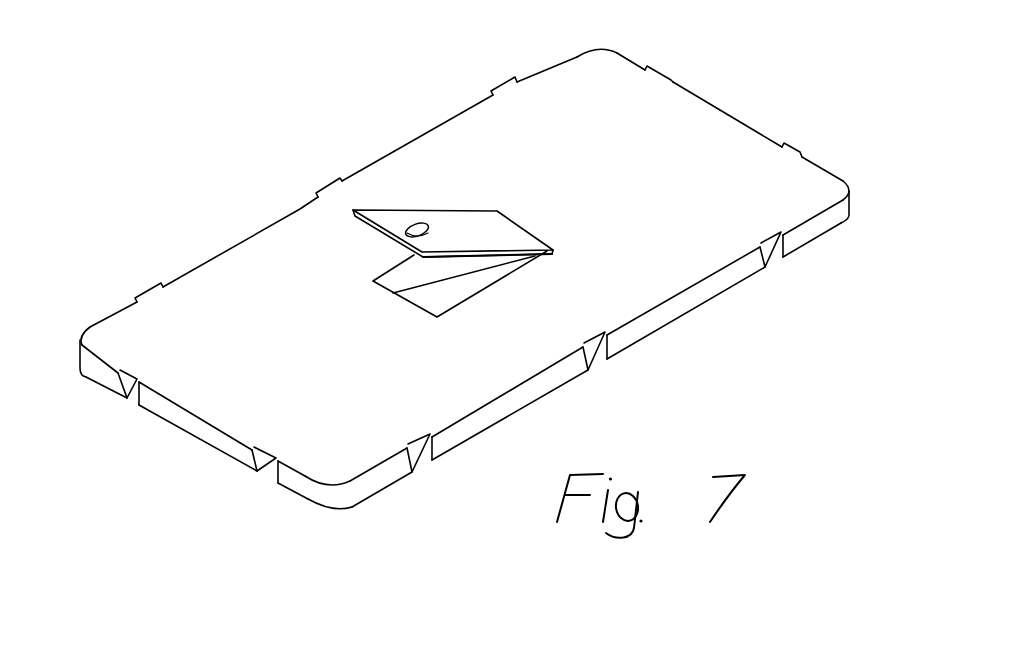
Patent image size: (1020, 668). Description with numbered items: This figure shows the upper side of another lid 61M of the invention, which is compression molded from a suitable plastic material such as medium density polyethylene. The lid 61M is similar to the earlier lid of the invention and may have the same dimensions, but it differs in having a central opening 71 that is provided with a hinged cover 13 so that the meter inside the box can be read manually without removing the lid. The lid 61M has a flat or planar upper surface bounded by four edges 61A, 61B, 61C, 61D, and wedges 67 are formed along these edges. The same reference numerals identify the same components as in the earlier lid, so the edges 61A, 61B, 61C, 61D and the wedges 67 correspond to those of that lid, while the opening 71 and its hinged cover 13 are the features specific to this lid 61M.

The flap 13 is at (478, 228).
The central opening 71 is at (408, 277).
The wedges 67 is at (317, 192).
The edge 61A is at (238, 447).
The edge 61B is at (545, 405).
The edge 61C is at (728, 118).
The edge 61D is at (377, 163).
The lid 61M is at (445, 287).